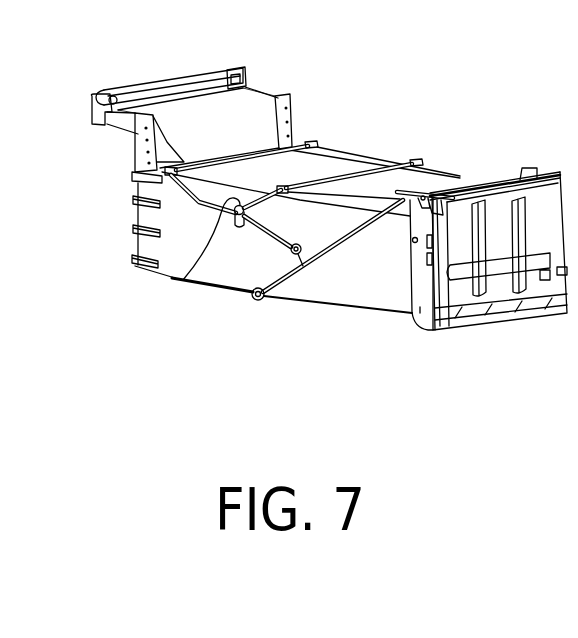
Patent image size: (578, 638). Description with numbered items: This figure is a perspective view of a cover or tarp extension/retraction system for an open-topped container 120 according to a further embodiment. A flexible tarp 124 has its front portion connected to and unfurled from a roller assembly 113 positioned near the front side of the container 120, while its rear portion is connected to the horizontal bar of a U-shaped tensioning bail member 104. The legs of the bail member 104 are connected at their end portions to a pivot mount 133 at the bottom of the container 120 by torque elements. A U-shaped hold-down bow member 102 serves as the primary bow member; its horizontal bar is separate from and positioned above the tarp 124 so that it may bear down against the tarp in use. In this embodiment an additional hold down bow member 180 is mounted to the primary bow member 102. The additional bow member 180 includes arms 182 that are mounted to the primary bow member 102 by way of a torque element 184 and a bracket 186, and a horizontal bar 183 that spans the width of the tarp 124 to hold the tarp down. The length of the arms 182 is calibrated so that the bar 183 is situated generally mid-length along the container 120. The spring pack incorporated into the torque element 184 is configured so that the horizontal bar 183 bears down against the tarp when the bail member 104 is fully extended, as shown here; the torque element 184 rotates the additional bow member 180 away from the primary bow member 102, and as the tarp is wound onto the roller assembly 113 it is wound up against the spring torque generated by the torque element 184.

The roller assembly 113 is at (222, 66).
The tarp 124 is at (243, 112).
The horizontal bar 183 is at (320, 178).
The additional hold down bow member 180 is at (349, 169).
The arms 182 is at (246, 188).
The torque element 184 is at (214, 204).
The bracket 186 is at (188, 280).
The hold-down bow member 102 is at (248, 230).
The tensioning bail member 104 is at (321, 255).
The pivot mount 133 is at (253, 303).
The open-topped container 120 is at (375, 292).